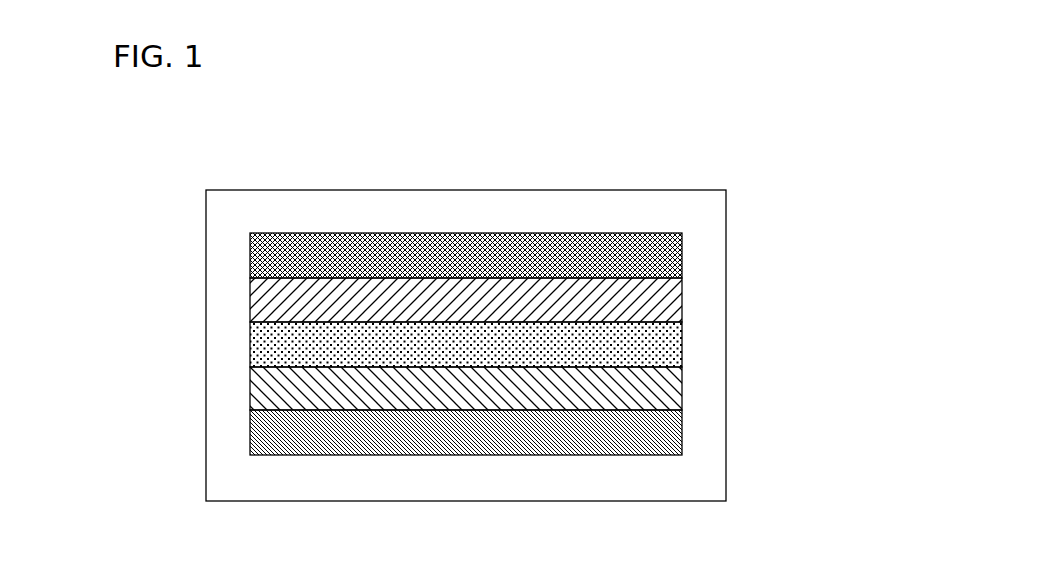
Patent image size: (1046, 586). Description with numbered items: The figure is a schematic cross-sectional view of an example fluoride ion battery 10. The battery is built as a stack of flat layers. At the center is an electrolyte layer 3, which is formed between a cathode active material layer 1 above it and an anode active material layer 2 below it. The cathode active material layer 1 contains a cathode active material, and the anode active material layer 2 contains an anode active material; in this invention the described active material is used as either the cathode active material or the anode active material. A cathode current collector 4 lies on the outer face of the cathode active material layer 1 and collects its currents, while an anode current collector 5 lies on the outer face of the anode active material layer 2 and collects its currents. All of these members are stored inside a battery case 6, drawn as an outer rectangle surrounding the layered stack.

The fluoride ion battery 10 is at (506, 311).
The battery case 6 is at (695, 219).
The cathode current collector 4 is at (659, 258).
The cathode active material layer 1 is at (655, 307).
The electrolyte layer 3 is at (650, 353).
The anode active material layer 2 is at (650, 398).
The anode current collector 5 is at (655, 437).